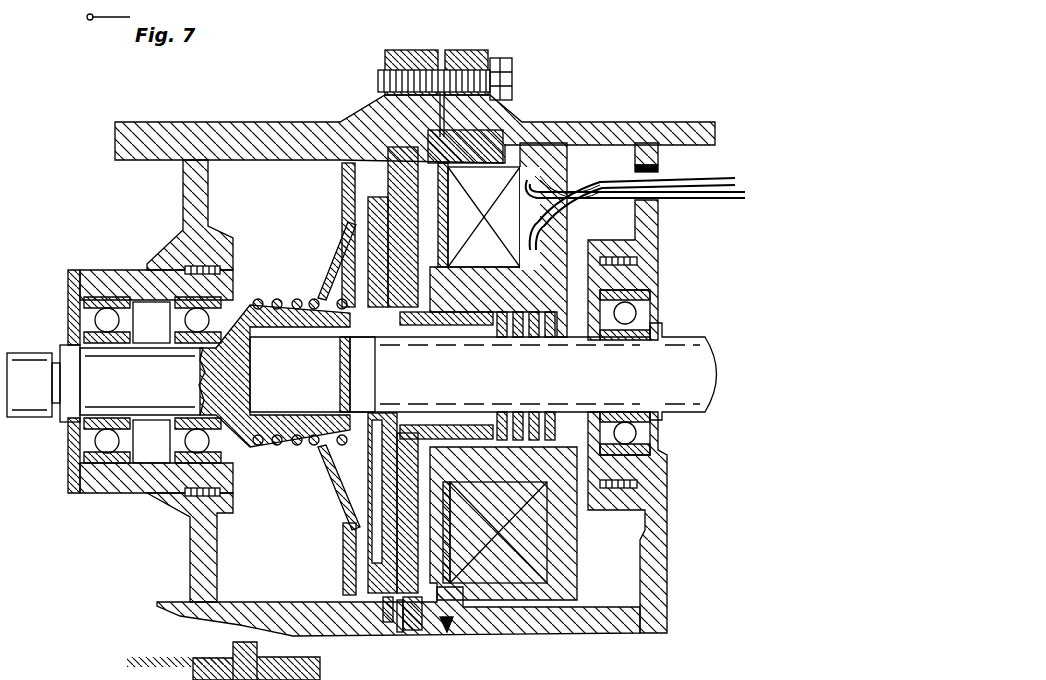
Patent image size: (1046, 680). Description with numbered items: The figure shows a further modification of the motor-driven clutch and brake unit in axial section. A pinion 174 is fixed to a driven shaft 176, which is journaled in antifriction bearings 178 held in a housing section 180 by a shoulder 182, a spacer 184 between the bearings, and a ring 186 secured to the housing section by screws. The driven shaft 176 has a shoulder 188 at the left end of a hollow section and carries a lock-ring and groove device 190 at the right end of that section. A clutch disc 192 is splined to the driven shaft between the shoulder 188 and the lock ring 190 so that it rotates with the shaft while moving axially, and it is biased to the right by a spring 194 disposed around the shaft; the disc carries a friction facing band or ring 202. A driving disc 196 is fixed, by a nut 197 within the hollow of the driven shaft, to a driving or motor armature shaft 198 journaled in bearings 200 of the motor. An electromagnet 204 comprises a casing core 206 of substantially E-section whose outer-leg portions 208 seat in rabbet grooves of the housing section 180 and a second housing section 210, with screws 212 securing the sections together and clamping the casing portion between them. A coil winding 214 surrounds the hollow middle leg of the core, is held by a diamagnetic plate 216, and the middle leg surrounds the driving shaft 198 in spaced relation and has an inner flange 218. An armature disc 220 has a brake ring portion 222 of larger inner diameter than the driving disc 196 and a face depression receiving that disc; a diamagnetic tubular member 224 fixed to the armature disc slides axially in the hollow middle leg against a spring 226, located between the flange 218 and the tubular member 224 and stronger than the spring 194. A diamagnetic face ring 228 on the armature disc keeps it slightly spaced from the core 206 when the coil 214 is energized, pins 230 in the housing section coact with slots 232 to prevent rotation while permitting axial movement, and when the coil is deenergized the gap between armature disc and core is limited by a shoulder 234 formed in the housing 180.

The pinion 174 is at (26, 350).
The driven shaft 176 is at (124, 384).
The antifriction bearings 178 is at (115, 302).
The housing section 180 is at (190, 540).
The shoulder 182 is at (68, 302).
The spacer 184 is at (151, 382).
The ring 186 is at (232, 250).
The shoulder 188 is at (250, 457).
The lock-ring and groove device 190 is at (337, 452).
The clutch disc 192 is at (330, 272).
The spring 194 is at (277, 302).
The driving disc 196 is at (345, 230).
The nut 197 is at (350, 404).
The driving or motor armature shaft 198 is at (503, 384).
The bearings 200 is at (645, 315).
The friction facing band or ring 202 is at (347, 528).
The electromagnet 204 is at (588, 560).
The casing core 206 is at (568, 178).
The portions of outer legs 208 is at (447, 95).
The housing section 210 is at (627, 627).
The screws 212 is at (512, 68).
The coil winding 214 is at (486, 224).
The diamagnetic plate 216 is at (447, 237).
The inner flange 218 is at (563, 333).
The armature disc 220 is at (415, 535).
The brake ring portion 222 is at (348, 122).
The diamagnetic tubular member 224 is at (455, 327).
The spring 226 is at (510, 440).
The diamagnetic face ring 228 is at (420, 168).
The pin 230 is at (400, 607).
The slot 232 is at (420, 607).
The shoulder 234 is at (383, 607).